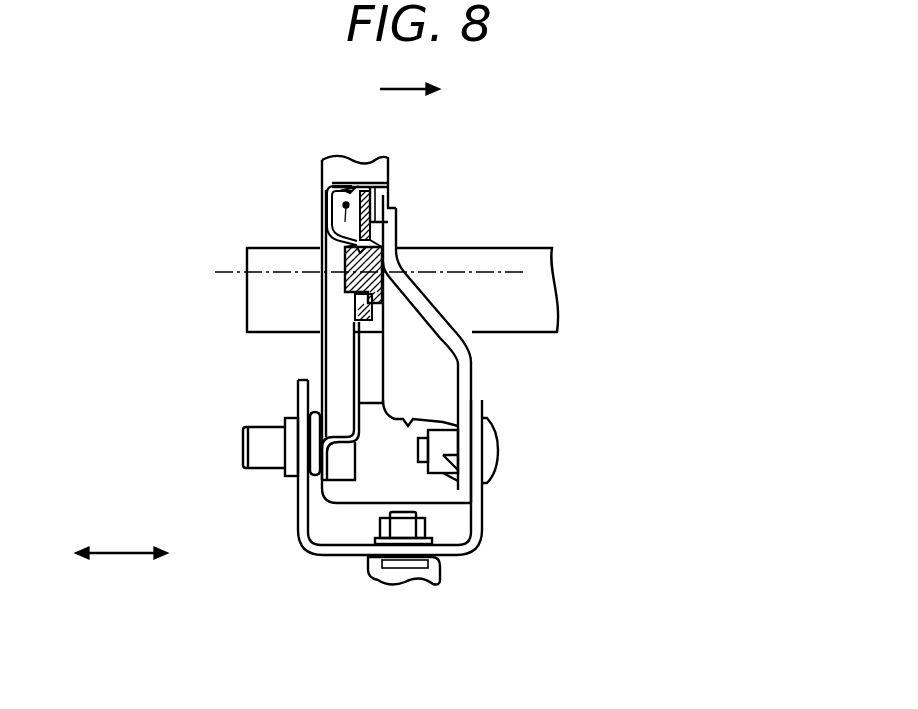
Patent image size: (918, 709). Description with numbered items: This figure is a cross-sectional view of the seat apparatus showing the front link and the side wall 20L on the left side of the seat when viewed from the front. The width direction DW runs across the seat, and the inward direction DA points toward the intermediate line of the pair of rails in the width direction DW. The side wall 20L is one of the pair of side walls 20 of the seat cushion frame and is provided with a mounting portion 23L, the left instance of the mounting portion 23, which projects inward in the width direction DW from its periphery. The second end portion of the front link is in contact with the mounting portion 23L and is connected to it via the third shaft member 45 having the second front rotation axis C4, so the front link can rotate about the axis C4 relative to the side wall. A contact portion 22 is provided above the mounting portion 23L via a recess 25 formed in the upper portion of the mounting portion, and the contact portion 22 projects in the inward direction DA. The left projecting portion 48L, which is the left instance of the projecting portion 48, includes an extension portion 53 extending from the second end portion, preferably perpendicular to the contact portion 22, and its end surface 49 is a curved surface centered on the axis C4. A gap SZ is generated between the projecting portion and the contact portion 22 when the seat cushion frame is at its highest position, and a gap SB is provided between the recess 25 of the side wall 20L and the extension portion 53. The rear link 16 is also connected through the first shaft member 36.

The rear link 16 is at (472, 362).
The contact portion 22 is at (360, 183).
The end surface 49 is at (352, 187).
The extension portion 53 is at (372, 206).
The left projecting portion 48L is at (376, 243).
The projecting portion 48 is at (363, 307).
The gap SZ is at (340, 188).
The recess 25 is at (343, 206).
The gap SB is at (350, 247).
The second front rotation axis C4 is at (522, 270).
The third shaft member 45 is at (385, 292).
The mounting portion 23 is at (368, 366).
The mounting portion of the left side wall 23L is at (315, 443).
The side wall 20 is at (333, 480).
The left side wall 20L is at (389, 462).
The first shaft member 36 is at (499, 462).
The inward direction DA is at (410, 75).
The width direction DW is at (121, 572).